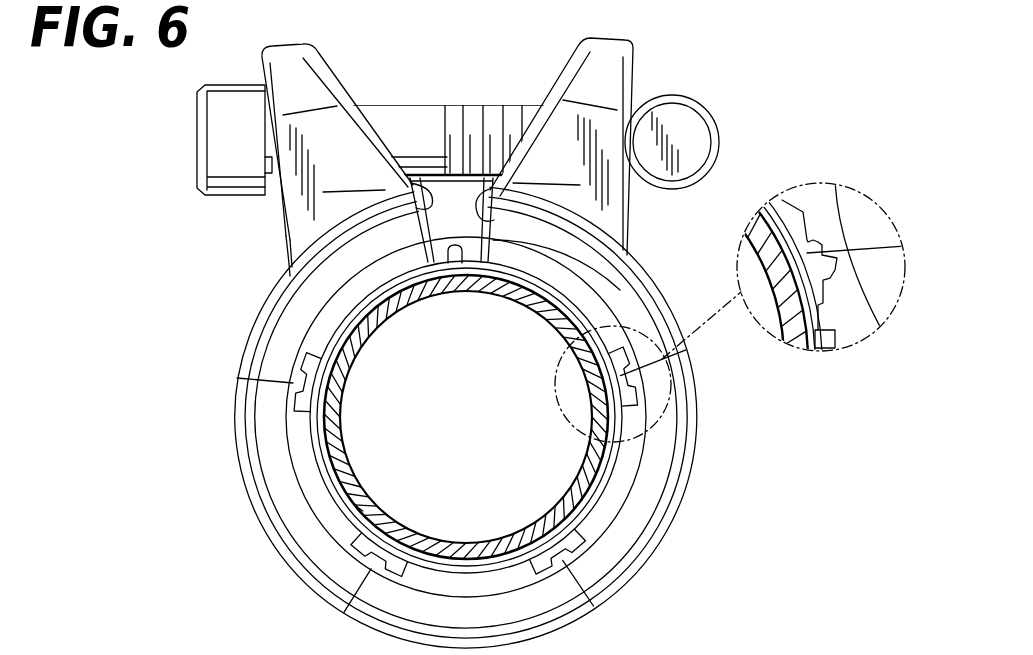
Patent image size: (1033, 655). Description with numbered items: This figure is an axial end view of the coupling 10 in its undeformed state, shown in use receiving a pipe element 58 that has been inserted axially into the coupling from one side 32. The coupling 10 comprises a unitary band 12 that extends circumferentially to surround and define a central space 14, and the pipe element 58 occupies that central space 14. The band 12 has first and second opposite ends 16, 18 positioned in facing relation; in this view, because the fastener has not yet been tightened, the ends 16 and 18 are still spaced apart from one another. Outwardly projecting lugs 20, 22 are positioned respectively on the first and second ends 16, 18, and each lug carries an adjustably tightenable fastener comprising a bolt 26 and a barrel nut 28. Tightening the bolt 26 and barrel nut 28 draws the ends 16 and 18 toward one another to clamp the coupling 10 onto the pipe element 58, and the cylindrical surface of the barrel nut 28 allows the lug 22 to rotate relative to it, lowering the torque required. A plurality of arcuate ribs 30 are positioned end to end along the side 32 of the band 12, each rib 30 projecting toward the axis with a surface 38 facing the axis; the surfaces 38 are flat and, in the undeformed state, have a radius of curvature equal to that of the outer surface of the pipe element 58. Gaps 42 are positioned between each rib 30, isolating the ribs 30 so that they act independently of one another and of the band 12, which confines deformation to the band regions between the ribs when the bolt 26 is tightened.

The coupling 10 is at (690, 477).
The band 12 is at (630, 527).
The central space 14 is at (480, 440).
The first end 16 is at (413, 192).
The second end 18 is at (493, 203).
The lug 20 is at (305, 72).
The lug 22 is at (627, 58).
The bolt 26 is at (450, 110).
The barrel nut 28 is at (695, 131).
The arcuate rib 30 is at (615, 487).
The side 32 is at (603, 553).
The surface 38 is at (363, 330).
The gap 42 is at (617, 378).
The pipe element 58 is at (360, 503).